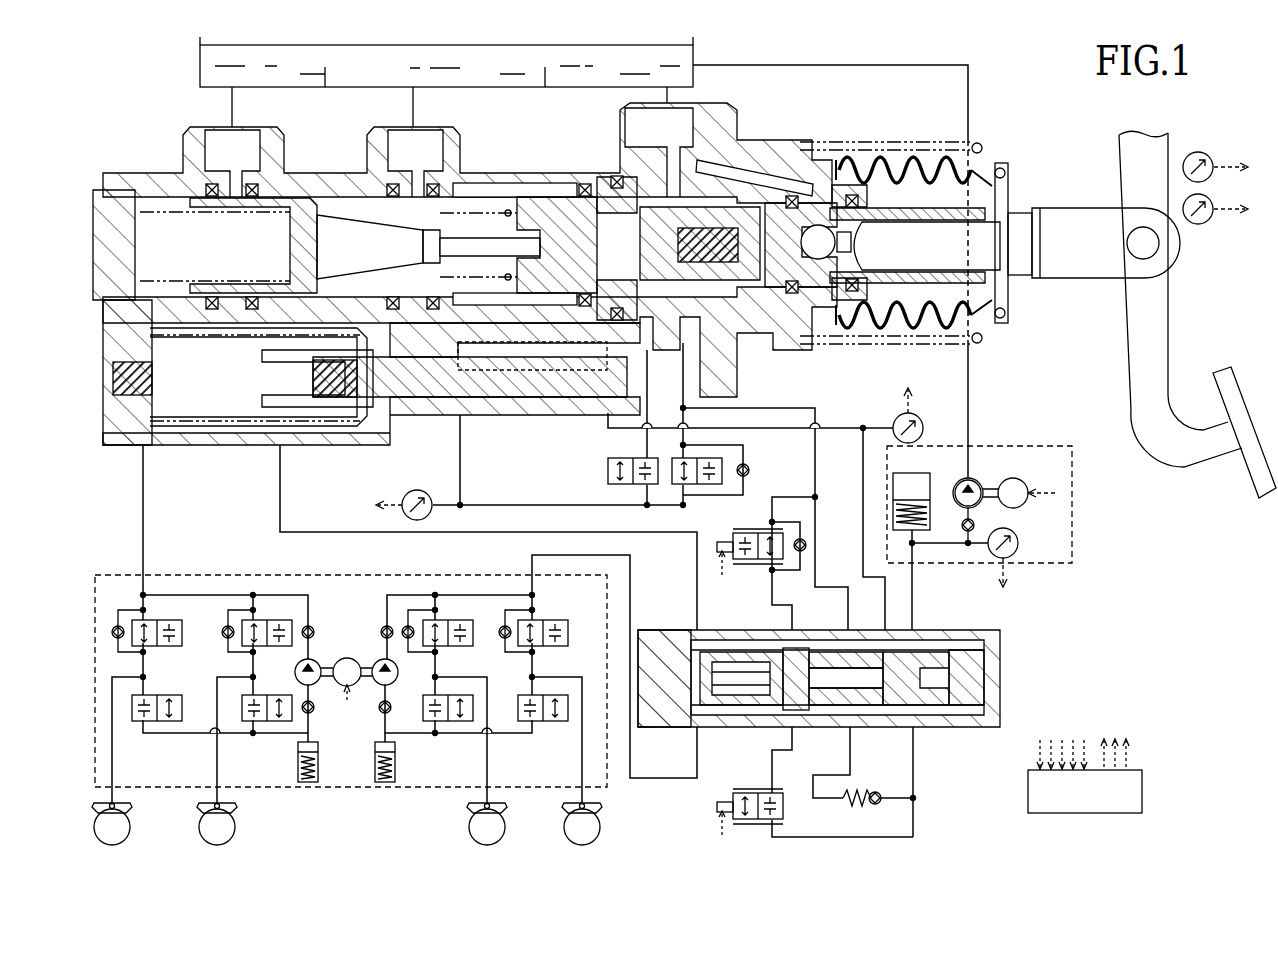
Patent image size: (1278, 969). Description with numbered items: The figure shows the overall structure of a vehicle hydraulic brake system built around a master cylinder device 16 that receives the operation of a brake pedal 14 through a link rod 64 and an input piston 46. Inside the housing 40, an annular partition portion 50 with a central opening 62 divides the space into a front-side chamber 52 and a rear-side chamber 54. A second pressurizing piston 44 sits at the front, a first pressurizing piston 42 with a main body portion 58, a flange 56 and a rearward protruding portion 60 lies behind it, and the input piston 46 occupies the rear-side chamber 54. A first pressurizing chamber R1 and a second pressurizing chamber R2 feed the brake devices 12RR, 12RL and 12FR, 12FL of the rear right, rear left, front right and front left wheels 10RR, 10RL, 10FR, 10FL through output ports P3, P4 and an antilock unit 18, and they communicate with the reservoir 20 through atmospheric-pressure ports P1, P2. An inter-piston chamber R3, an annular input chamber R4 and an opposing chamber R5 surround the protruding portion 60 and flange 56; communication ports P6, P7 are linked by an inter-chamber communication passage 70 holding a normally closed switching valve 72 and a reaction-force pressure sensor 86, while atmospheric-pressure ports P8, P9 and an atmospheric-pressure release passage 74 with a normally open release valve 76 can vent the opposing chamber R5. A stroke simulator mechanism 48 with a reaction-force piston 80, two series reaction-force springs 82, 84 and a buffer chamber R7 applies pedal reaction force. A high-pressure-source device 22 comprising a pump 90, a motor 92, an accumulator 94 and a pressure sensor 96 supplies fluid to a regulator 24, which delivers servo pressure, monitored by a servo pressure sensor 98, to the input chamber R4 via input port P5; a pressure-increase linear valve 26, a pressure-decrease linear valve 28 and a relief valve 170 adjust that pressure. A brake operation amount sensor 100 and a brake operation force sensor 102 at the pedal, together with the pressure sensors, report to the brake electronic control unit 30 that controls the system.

The master cylinder device 16 is at (150, 72).
The reservoir 20 is at (693, 58).
The atmospheric-pressure port P2 is at (243, 127).
The atmospheric-pressure port P1 is at (400, 127).
The atmospheric-pressure port P8 is at (688, 103).
The second pressurizing chamber R2 is at (160, 205).
The first pressurizing chamber R1 is at (443, 227).
The opposing chamber R5 is at (500, 192).
The inter-piston chamber R3 is at (780, 215).
The input chamber R4 is at (548, 395).
The buffer chamber R7 is at (630, 415).
The second pressurizing piston 44 is at (300, 200).
The front-side chamber 52 is at (345, 182).
The housing 40 is at (480, 172).
The first pressurizing piston 42 is at (540, 205).
The main body portion 58 is at (526, 215).
The flange 56 is at (558, 215).
The annular partition portion 50 is at (640, 215).
The opening 62 is at (625, 205).
The rear-side chamber 54 is at (722, 228).
The protruding portion 60 is at (770, 205).
The atmospheric-pressure release passage 74 is at (712, 383).
The link rod 64 is at (925, 224).
The input piston 46 is at (893, 163).
The brake operation amount sensor 100 is at (1196, 222).
The brake pedal 14 is at (1220, 372).
The brake operation force sensor 102 is at (1188, 156).
The reaction-force spring 82 is at (195, 422).
The reaction-force spring 84 is at (305, 402).
The reaction-force piston 80 is at (430, 397).
The stroke simulator mechanism 48 is at (352, 432).
The output port P4 is at (140, 446).
The output port P3 is at (278, 446).
The communication port P7 is at (466, 415).
The input port P5 is at (604, 415).
The communication port P6 is at (648, 350).
The atmospheric-pressure port P9 is at (683, 360).
The inter-chamber communication passage 70 is at (503, 505).
The reaction-force pressure sensor 86 is at (428, 512).
The inter-chamber-communication switching valve 72 is at (608, 472).
The atmospheric-pressure release valve 76 is at (722, 460).
The pressure-decrease linear valve 28 is at (735, 533).
The servo pressure sensor 98 is at (898, 416).
The high-pressure-source device 22 is at (882, 347).
The pump 90 is at (990, 473).
The motor 92 is at (1018, 480).
The accumulator 94 is at (925, 500).
The high-pressure-source pressure sensor 96 is at (1014, 533).
The regulator 24 is at (1000, 680).
The pressure-increase linear valve 26 is at (748, 792).
The relief valve 170 is at (874, 806).
The brake electronic control unit 30 is at (1132, 770).
The antilock unit 18 is at (125, 573).
The brake device 12FR is at (115, 804).
The front right wheel 10FR is at (118, 832).
The brake device 12FL is at (220, 804).
The front left wheel 10FL is at (223, 832).
The brake device 12RR is at (490, 804).
The rear right wheel 10RR is at (493, 832).
The brake device 12RL is at (585, 804).
The rear left wheel 10RL is at (588, 832).